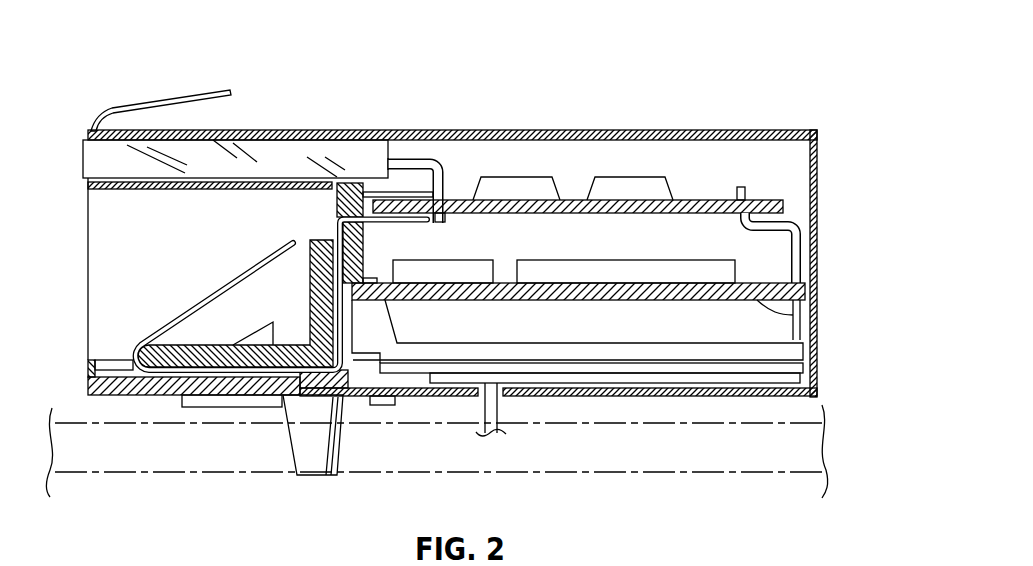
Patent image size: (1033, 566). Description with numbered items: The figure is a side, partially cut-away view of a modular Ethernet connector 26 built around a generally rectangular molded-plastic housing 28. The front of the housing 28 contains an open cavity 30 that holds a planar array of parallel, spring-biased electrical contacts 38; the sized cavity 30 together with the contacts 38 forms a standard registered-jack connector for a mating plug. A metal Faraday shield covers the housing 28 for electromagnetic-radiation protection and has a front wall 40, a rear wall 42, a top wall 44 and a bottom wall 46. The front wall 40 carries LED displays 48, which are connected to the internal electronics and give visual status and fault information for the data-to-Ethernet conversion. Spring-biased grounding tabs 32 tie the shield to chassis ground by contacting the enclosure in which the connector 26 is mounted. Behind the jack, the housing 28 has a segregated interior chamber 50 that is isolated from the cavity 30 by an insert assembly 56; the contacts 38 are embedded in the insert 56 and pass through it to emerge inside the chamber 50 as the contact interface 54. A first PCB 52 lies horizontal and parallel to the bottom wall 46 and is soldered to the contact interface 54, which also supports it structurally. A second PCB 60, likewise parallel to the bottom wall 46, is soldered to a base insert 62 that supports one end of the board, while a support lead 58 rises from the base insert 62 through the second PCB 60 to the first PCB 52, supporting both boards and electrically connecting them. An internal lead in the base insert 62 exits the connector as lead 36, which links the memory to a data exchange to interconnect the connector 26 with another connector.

The connector 26 is at (776, 96).
The housing 28 is at (478, 130).
The open cavity 30 is at (127, 226).
The grounding tabs 32 is at (316, 468).
The lead 36 is at (497, 412).
The electrical contacts 38 is at (225, 287).
The front wall 40 is at (90, 375).
The rear wall 42 is at (818, 216).
The top wall 44 is at (313, 130).
The bottom wall 46 is at (665, 398).
The LED displays 48 is at (83, 155).
The interior chamber 50 is at (700, 150).
The first PCB 52 is at (785, 202).
The contact interface 54 is at (398, 220).
The insert assembly 56 is at (258, 360).
The support lead 58 is at (802, 256).
The second PCB 60 is at (760, 300).
The base insert 62 is at (797, 354).